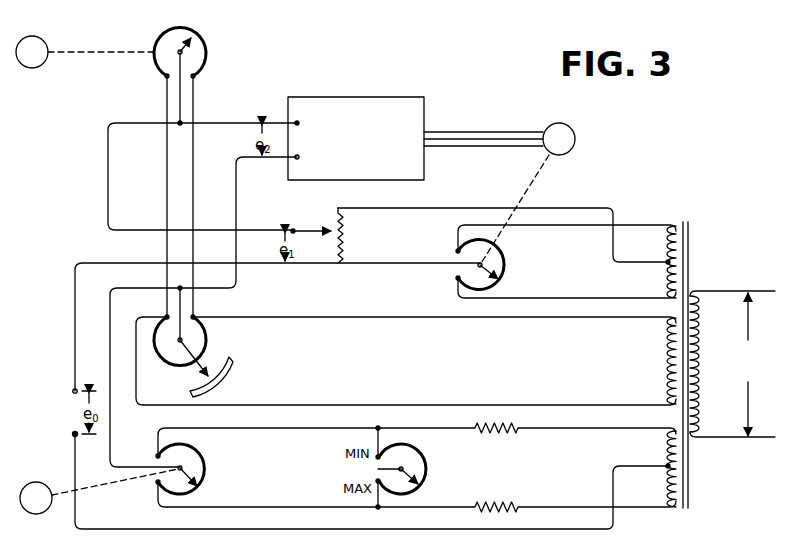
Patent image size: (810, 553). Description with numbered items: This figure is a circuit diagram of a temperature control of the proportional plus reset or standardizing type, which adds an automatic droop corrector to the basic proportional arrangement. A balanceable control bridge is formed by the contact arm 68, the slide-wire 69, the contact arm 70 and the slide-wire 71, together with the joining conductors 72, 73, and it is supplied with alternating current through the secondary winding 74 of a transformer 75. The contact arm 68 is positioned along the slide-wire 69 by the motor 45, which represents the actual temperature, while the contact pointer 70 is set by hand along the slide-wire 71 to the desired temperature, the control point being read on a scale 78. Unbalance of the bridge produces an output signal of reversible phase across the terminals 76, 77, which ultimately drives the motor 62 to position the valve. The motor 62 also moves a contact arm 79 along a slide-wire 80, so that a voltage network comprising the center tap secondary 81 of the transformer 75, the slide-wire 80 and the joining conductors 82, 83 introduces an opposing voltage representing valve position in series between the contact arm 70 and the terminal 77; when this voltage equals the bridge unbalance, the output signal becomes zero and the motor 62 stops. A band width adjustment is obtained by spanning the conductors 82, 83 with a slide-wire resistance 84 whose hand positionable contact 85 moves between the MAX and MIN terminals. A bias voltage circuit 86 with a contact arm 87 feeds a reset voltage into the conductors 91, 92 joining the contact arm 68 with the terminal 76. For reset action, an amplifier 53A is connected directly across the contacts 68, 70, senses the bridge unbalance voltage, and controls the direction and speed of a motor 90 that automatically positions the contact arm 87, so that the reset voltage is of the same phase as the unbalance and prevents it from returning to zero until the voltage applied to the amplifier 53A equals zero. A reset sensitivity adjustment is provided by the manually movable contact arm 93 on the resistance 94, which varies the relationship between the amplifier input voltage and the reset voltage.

The motor 45 is at (30, 66).
The contact arm 68 is at (175, 81).
The slide-wire 69 is at (206, 55).
The joining conductor 72 is at (167, 93).
The joining conductor 73 is at (193, 95).
The amplifier 53A is at (415, 138).
The motor 90 is at (575, 132).
The conductor 91 is at (108, 185).
The conductor 92 is at (75, 300).
The contact arm 93 is at (306, 226).
The resistance 94 is at (346, 240).
The terminal 76 is at (61, 391).
The terminal 77 is at (358, 477).
The contact arm 70 is at (185, 332).
The slide-wire 71 is at (206, 339).
The scale 78 is at (233, 367).
The contact arm 79 is at (183, 468).
The slide-wire 80 is at (206, 470).
The motor 62 is at (36, 482).
The joining conductor 82 is at (271, 428).
The joining conductor 83 is at (294, 505).
The slide-wire resistance 84 is at (426, 471).
The hand positionable contact 85 is at (413, 458).
The voltage circuit 86 is at (573, 272).
The contact arm 87 is at (486, 282).
The secondary winding 74 is at (667, 355).
The center tap secondary 81 is at (667, 452).
The transformer 75 is at (697, 535).